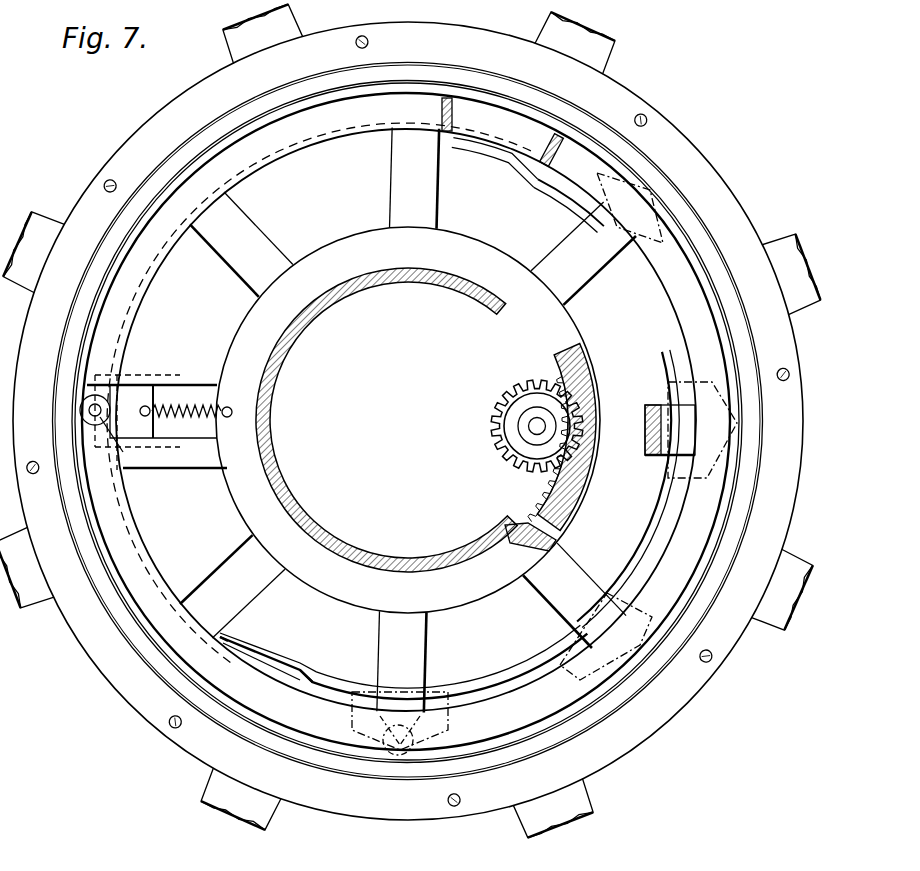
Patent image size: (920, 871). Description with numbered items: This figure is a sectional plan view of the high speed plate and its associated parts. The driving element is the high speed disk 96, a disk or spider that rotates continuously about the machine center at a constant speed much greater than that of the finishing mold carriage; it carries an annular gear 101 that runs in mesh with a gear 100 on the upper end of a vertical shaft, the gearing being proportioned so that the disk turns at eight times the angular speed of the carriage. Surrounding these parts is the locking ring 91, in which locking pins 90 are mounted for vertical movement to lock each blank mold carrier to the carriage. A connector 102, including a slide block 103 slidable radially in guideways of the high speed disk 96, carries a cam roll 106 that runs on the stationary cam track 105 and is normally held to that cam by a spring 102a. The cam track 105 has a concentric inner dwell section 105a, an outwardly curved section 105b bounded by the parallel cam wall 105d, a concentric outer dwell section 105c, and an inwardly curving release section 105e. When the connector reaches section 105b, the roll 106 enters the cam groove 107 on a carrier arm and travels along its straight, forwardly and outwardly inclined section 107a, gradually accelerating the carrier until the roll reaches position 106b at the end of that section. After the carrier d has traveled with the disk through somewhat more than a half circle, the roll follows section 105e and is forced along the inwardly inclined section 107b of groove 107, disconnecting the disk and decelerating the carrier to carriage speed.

The locking pins 90 is at (642, 114).
The locking ring 91 is at (700, 180).
The high speed disk 96 is at (141, 294).
The gear 100 is at (497, 422).
The annular gear 101 is at (557, 505).
The connector 102 is at (157, 422).
The spring 102a is at (202, 403).
The slide block 103 is at (143, 427).
The cam track 105 is at (512, 664).
The cam section 105a is at (555, 194).
The cam section 105b is at (263, 652).
The cam section 105c is at (146, 600).
The cam wall 105d is at (262, 707).
The cam section 105e is at (500, 156).
The cam roll 106 is at (100, 400).
The roll position 106b is at (392, 742).
The cam groove 107 is at (613, 603).
The cam section 107a is at (428, 705).
The cam section 107b is at (640, 258).
The carrier d is at (377, 667).